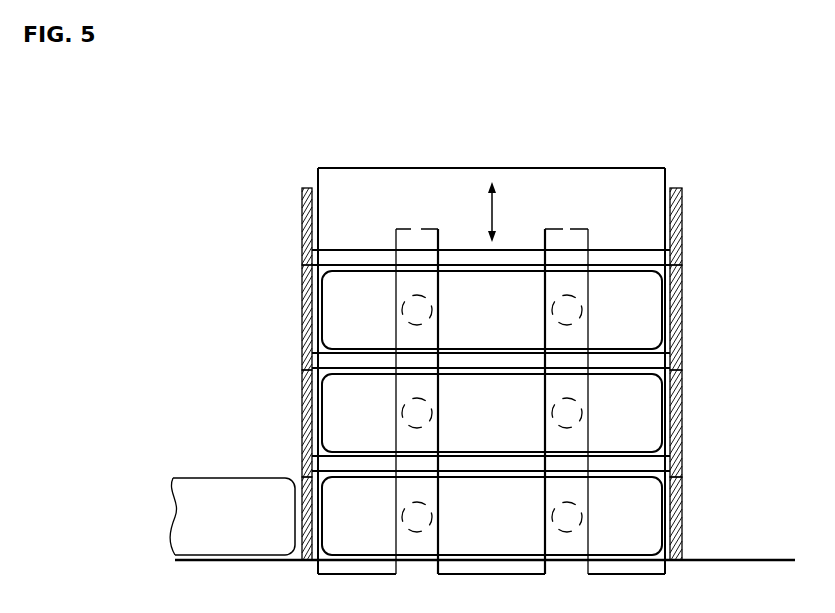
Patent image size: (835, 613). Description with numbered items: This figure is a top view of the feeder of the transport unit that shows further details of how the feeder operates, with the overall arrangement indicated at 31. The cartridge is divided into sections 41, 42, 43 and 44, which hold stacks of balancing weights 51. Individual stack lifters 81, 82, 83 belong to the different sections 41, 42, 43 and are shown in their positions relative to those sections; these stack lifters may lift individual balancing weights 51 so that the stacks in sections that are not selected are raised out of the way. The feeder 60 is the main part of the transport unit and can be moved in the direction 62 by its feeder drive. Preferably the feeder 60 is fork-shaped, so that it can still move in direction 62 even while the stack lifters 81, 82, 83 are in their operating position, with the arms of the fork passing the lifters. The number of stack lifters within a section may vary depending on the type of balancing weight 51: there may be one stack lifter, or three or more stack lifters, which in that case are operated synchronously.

The stacked module assembly 31 is at (491, 328).
The feeder 60 is at (607, 180).
The direction 62 is at (497, 208).
The section 44 is at (667, 218).
The section 43 is at (667, 305).
The section 42 is at (667, 411).
The section 41 is at (670, 532).
The balancing weight 51 is at (648, 506).
The stack lifter 81 is at (555, 515).
The stack lifter 82 is at (555, 412).
The stack lifter 83 is at (555, 309).